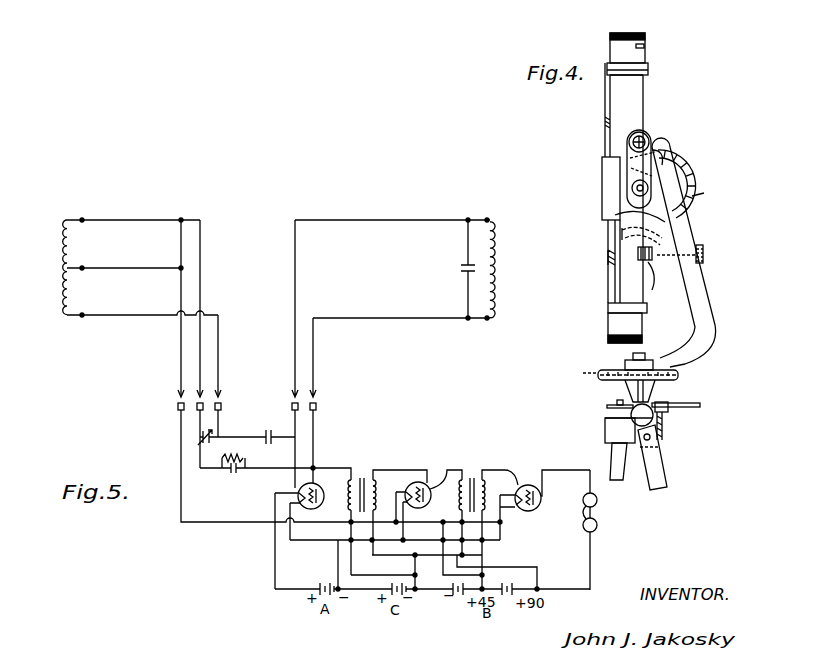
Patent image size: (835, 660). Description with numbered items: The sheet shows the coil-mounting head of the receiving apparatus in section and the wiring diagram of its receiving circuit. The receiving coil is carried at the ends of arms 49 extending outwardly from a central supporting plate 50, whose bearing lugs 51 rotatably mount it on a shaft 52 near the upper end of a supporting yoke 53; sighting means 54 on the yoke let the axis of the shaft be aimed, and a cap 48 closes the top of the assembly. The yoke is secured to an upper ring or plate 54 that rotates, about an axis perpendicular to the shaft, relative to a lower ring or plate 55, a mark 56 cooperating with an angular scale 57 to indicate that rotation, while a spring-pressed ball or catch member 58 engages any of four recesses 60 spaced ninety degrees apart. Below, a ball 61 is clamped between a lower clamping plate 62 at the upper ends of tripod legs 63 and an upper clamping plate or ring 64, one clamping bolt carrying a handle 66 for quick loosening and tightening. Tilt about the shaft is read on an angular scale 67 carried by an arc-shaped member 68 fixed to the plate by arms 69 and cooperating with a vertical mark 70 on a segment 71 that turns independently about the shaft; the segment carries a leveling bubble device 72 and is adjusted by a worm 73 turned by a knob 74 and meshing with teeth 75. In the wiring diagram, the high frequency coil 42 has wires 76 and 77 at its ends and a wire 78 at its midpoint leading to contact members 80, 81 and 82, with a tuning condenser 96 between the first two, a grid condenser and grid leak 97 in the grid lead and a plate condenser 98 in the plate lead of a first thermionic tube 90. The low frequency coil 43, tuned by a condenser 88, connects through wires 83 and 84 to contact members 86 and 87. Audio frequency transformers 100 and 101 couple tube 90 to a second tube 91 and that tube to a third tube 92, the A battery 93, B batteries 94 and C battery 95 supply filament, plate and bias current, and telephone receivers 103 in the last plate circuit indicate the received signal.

In FIG. 5, the high frequency coil 42 is at (57, 251).
In FIG. 4, the high frequency coil 42 is at (636, 33).
In FIG. 5, the low frequency coil 43 is at (507, 281).
In FIG. 4, the cap 48 is at (645, 45).
In FIG. 4, the arms 49 is at (605, 106).
In FIG. 4, the central supporting plate 50 is at (601, 190).
In FIG. 4, the bearing lugs 51 is at (620, 203).
In FIG. 4, the shaft 52 is at (665, 153).
In FIG. 4, the supporting yoke 53 is at (684, 290).
In FIG. 4, the upper ring or plate 54 is at (646, 130).
In FIG. 4, the lower ring or plate 55 is at (625, 392).
In FIG. 4, the mark 56 is at (655, 362).
In FIG. 4, the angular scale 57 is at (655, 390).
In FIG. 4, the ball or catch member 58 is at (579, 372).
In FIG. 4, the recesses 60 is at (680, 375).
In FIG. 4, the ball 61 is at (668, 414).
In FIG. 4, the lower clamping plate 62 is at (667, 446).
In FIG. 4, the tripod legs 63 is at (628, 483).
In FIG. 4, the upper clamping plate or ring 64 is at (615, 410).
In FIG. 4, the handle 66 is at (700, 405).
In FIG. 4, the angular scale 67 is at (708, 193).
In FIG. 4, the arc-shaped member 68 is at (697, 170).
In FIG. 4, the arms 69 is at (662, 152).
In FIG. 4, the vertical mark 70 is at (660, 242).
In FIG. 4, the segment 71 is at (610, 262).
In FIG. 4, the leveling bubble device 72 is at (662, 222).
In FIG. 4, the worm 73 is at (659, 285).
In FIG. 4, the knob 74 is at (704, 254).
In FIG. 4, the teeth 75 is at (634, 262).
In FIG. 5, the wire 76 is at (136, 317).
In FIG. 5, the wire 77 is at (146, 209).
In FIG. 5, the wire 78 is at (150, 267).
In FIG. 5, the contact member 80 is at (222, 407).
In FIG. 5, the contact member 81 is at (214, 393).
In FIG. 5, the contact member 82 is at (177, 408).
In FIG. 5, the wire 83 is at (388, 317).
In FIG. 5, the wire 84 is at (398, 219).
In FIG. 5, the contact member 86 is at (316, 407).
In FIG. 5, the contact member 87 is at (298, 402).
In FIG. 5, the condenser 88 is at (465, 267).
In FIG. 5, the thermionic tube 90 is at (323, 488).
In FIG. 5, the thermionic tube 91 is at (424, 486).
In FIG. 5, the thermionic tube 92 is at (528, 485).
In FIG. 5, the A battery 93 is at (326, 583).
In FIG. 5, the B batteries 94 is at (470, 608).
In FIG. 5, the C battery 95 is at (402, 605).
In FIG. 5, the tuning condenser 96 is at (205, 447).
In FIG. 5, the grid condenser and grid leak 97 is at (237, 474).
In FIG. 5, the plate condenser 98 is at (268, 430).
In FIG. 5, the audio frequency transformer 100 is at (365, 478).
In FIG. 5, the audio frequency transformer 101 is at (474, 478).
In FIG. 5, the telephone receivers 103 is at (608, 524).